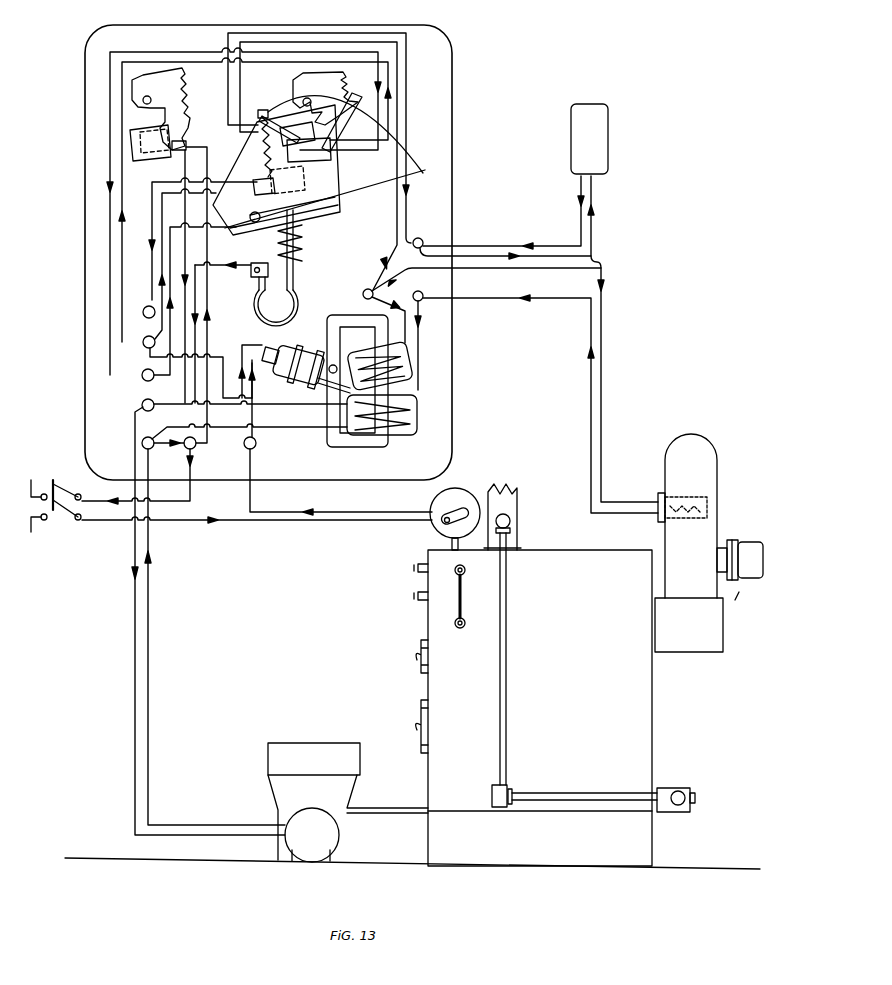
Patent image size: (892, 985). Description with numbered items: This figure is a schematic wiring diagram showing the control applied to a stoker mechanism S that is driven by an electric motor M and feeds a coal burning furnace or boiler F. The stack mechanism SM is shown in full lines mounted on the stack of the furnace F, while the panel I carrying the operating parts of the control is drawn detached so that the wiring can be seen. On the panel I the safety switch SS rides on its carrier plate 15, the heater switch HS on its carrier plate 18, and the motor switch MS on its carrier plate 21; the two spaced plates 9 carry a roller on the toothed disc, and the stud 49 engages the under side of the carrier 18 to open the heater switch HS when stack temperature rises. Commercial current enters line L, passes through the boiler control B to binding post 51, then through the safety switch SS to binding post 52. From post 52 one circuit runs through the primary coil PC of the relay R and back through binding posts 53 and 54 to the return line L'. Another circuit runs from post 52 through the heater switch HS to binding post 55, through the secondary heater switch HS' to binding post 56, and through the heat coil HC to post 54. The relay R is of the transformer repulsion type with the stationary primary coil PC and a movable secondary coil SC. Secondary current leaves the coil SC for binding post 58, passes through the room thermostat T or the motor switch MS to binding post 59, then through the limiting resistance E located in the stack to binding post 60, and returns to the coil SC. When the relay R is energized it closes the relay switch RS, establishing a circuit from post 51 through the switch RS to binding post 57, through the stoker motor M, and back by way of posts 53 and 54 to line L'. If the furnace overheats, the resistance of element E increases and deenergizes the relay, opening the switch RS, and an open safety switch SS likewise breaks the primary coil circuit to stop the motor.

The panel I is at (448, 372).
The carrier plate 15 is at (176, 88).
The carrier plate 21 is at (330, 88).
The plates 9 is at (414, 163).
The carrier plate 18 is at (308, 182).
The stud 49 is at (250, 218).
The binding post 51 is at (257, 445).
The binding post 52 is at (144, 339).
The binding post 53 is at (152, 449).
The binding post 54 is at (194, 448).
The binding post 55 is at (146, 307).
The binding post 56 is at (143, 371).
The binding post 57 is at (143, 401).
The binding post 58 is at (366, 289).
The binding post 59 is at (419, 238).
The binding post 60 is at (421, 293).
The heat coil HC is at (304, 244).
The motor switch MS is at (268, 110).
The heater switch HS is at (247, 156).
The secondary heater switch HS' is at (324, 127).
The safety switch SS is at (187, 141).
The relay switch RS is at (305, 352).
The relay R is at (348, 316).
The secondary coil SC is at (408, 366).
The primary coil PC is at (417, 420).
The room thermostat T is at (589, 139).
The boiler control B is at (461, 503).
The limiting resistance E is at (709, 512).
The stack mechanism SM is at (763, 577).
The furnace or boiler F is at (635, 702).
The stoker mechanism S is at (318, 762).
The stoker motor M is at (313, 843).
The line L is at (55, 524).
The return line L' is at (55, 484).